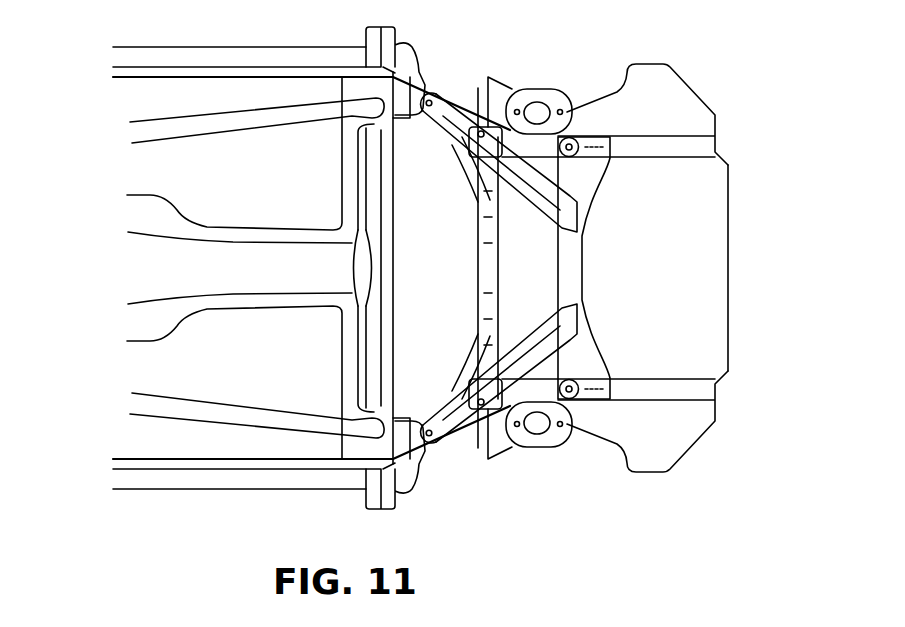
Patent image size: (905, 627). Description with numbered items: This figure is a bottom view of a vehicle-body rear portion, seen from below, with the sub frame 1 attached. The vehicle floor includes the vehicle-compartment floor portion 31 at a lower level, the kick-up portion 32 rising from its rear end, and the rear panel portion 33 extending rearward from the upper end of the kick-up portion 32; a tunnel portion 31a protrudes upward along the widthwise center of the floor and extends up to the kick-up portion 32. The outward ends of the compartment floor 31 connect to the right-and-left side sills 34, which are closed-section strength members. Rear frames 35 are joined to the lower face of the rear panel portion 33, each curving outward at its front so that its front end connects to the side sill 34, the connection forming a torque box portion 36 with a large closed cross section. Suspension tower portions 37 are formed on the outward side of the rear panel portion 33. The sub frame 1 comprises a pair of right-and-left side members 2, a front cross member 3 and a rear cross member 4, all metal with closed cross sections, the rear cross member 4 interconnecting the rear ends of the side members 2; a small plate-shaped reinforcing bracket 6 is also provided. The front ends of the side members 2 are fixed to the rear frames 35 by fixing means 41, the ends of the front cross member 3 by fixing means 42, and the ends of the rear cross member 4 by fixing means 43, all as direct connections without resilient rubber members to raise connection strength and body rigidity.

The sub frame 1 is at (584, 257).
The rear cross member 4 is at (624, 268).
The side members 2 is at (522, 206).
The front cross member 3 is at (479, 263).
The reinforcing bracket 6 is at (463, 170).
The vehicle-compartment floor portion 31 is at (200, 177).
The tunnel portion 31a is at (233, 282).
The kick-up portion 32 is at (363, 187).
The rear panel portion 33 is at (710, 175).
The side sills 34 is at (150, 52).
The rear frames 35 is at (666, 147).
The torque box portion 36 is at (405, 50).
The suspension tower portions 37 is at (546, 98).
The fixing means 41 is at (433, 100).
The fixing means 42 is at (481, 128).
The fixing means 43 is at (579, 142).